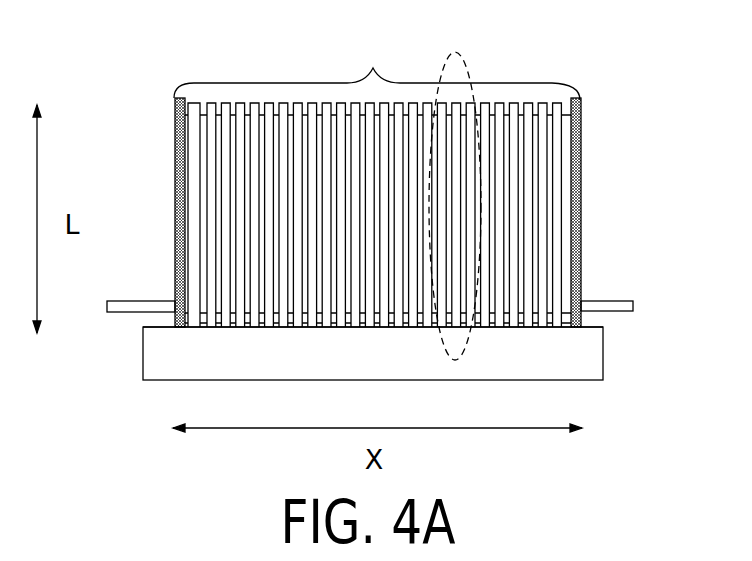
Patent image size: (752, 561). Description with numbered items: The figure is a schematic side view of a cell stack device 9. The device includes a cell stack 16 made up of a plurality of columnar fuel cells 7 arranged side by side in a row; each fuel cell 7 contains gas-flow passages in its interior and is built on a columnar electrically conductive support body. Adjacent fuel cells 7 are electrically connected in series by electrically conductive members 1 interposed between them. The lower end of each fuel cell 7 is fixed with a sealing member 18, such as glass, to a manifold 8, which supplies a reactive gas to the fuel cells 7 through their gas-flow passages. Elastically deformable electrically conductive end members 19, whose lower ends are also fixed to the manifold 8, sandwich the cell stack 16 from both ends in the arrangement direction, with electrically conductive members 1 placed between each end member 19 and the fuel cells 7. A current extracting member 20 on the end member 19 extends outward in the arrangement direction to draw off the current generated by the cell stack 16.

The electrically conductive member 1 is at (188, 190).
The fuel cell 7 is at (558, 149).
The manifold 8 is at (583, 362).
The cell stack device 9 is at (171, 85).
The cell stack 16 is at (415, 176).
The sealing member 18 is at (602, 327).
The electrically conductive end member 19 is at (581, 191).
The current extracting member 20 is at (603, 308).